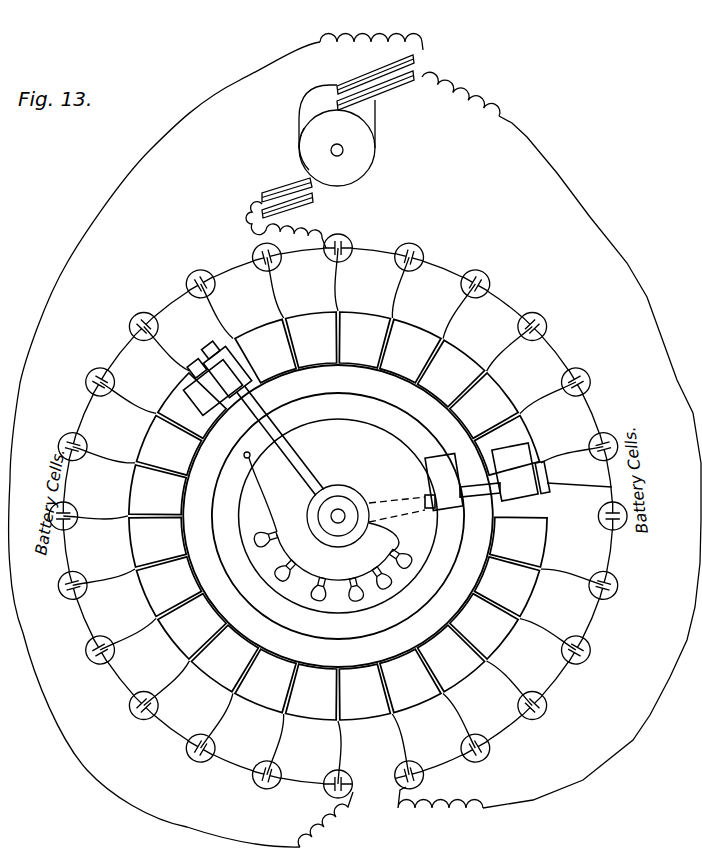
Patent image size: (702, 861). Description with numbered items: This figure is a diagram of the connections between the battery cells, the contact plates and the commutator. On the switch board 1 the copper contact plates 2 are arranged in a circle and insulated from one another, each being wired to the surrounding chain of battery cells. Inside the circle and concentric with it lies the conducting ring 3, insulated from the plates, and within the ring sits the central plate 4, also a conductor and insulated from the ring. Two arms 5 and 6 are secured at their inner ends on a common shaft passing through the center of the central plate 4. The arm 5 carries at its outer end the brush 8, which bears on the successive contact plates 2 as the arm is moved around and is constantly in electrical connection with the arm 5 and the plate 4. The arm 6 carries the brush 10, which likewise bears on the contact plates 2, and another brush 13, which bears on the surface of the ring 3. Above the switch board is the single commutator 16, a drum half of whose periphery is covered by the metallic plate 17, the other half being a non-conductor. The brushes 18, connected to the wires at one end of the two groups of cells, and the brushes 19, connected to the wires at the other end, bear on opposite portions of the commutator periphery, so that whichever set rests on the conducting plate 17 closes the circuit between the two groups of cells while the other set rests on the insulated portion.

The switch board 1 is at (338, 516).
The contact plates 2 is at (337, 515).
The ring 3 is at (338, 511).
The central plate 4 is at (376, 483).
The arm 5 is at (302, 474).
The arm 6 is at (334, 527).
The brush 8 is at (212, 388).
The brush 10 is at (552, 472).
The brush 13 is at (445, 476).
The commutator 16 is at (337, 135).
The metallic plate 17 is at (300, 155).
The brushes 18 is at (398, 86).
The brushes 19 is at (310, 187).